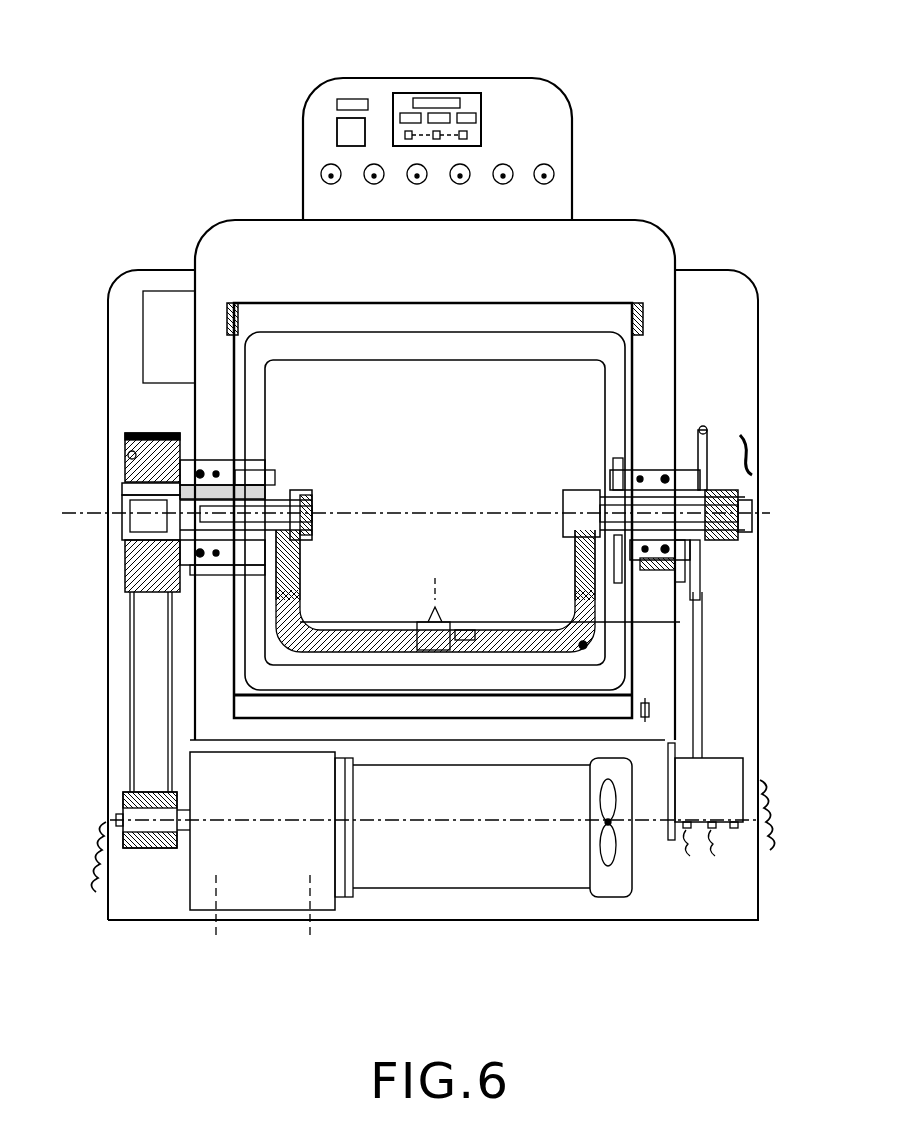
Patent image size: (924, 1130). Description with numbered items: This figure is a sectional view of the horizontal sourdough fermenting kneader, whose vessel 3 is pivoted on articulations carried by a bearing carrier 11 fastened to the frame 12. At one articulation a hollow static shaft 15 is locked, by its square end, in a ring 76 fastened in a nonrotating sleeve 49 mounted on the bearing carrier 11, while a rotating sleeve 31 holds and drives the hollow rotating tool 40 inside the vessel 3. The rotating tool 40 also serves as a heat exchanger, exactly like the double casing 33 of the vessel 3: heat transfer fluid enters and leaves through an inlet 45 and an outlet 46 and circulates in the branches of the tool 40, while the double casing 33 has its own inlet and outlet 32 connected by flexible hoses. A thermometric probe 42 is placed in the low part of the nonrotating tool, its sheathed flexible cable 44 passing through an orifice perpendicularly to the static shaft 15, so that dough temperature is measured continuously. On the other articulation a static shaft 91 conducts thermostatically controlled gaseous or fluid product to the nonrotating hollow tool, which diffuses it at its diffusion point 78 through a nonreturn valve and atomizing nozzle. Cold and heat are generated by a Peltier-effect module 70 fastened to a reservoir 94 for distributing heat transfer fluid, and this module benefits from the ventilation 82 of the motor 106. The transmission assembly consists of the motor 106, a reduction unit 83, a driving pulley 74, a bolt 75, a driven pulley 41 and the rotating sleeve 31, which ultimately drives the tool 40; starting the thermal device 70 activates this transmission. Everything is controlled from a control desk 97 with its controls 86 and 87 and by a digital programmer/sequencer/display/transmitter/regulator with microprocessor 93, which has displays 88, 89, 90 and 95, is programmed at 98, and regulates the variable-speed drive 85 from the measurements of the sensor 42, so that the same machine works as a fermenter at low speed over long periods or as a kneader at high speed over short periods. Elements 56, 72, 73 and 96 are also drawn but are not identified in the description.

The vessel 3 is at (641, 383).
The bearing carrier 11 is at (160, 436).
The frame 12 is at (677, 347).
The static shaft 15 is at (735, 525).
The rotating sleeve 31 is at (163, 478).
The inlet and outlet 32 is at (649, 712).
The double casing 33 is at (250, 712).
The hollow rotating tool 40 is at (283, 618).
The driven pulley 41 is at (132, 455).
The thermometric probe 42 is at (583, 645).
The sheathed flexible cable 44 is at (750, 458).
The heat transfer fluid inlet 45 is at (700, 562).
The heat transfer fluid outlet 46 is at (703, 432).
The nonrotating sleeve 49 is at (735, 550).
The shaft 56 is at (178, 513).
The Peltier-effect module 70 is at (725, 835).
The spring 72 is at (100, 845).
The spring 73 is at (760, 828).
The driving pulley 74 is at (190, 808).
The bolt 75 is at (152, 760).
The ring 76 is at (752, 497).
The diffusion point 78 is at (435, 650).
The ventilation 82 is at (606, 843).
The reduction unit 83 is at (279, 875).
The variable-speed drive 85 is at (160, 321).
The control 86 is at (350, 130).
The control 87 is at (556, 174).
The display 88 is at (444, 102).
The display 89 is at (462, 110).
The display 90 is at (433, 110).
The static shaft 91 is at (200, 500).
The digital programmer/sequencer/display/transmitter/regulator with microprocessor 93 is at (473, 98).
The reservoir 94 is at (730, 772).
The display 95 is at (404, 117).
The indicator 96 is at (342, 104).
The control desk 97 is at (338, 88).
The programming 98 is at (470, 134).
The motor 106 is at (480, 863).